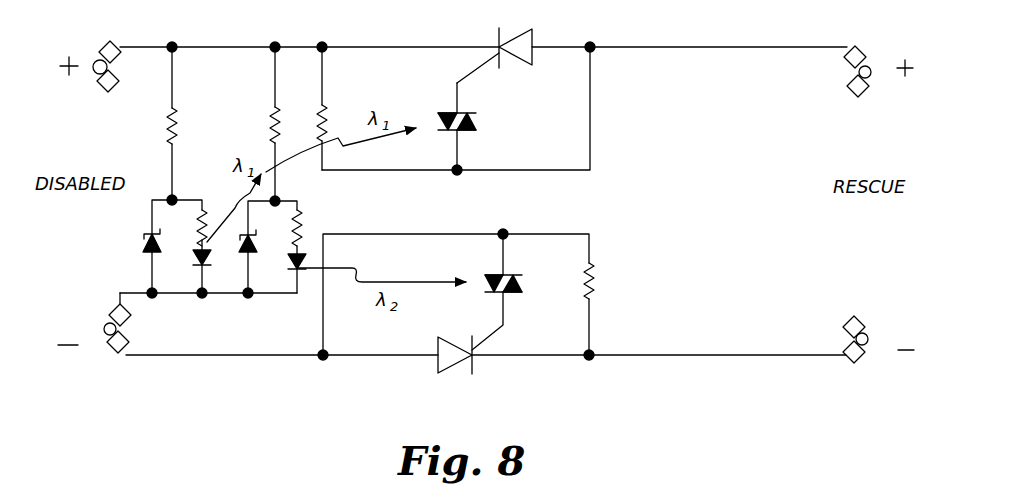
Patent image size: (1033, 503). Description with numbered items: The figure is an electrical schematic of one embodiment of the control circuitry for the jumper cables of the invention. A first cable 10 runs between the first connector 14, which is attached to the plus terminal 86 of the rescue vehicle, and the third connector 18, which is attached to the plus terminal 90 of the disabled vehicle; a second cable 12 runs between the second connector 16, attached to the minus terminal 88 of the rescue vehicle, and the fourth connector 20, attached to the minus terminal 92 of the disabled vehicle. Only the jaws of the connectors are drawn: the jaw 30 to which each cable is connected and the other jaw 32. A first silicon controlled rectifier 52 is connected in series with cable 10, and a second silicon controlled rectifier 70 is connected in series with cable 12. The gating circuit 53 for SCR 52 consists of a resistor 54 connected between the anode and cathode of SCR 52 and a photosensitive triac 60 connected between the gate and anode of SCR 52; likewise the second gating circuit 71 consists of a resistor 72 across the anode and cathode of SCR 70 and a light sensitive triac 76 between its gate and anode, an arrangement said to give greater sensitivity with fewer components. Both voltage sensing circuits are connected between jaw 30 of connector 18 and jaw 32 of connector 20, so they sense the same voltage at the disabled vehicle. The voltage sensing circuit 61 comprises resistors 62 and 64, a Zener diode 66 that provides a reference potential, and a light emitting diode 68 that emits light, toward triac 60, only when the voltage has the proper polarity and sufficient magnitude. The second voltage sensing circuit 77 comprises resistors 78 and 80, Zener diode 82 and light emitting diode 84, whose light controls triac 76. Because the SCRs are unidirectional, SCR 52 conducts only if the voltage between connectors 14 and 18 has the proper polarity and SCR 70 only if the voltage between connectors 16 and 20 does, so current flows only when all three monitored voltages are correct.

The first cable 10 is at (218, 47).
The second cable 12 is at (225, 358).
The first connector 14 is at (861, 50).
The second connector 16 is at (847, 363).
The third connector 18 is at (121, 45).
The fourth connector 20 is at (118, 358).
The jaw 30 is at (489, 210).
The other jaw 32 is at (110, 93).
The first silicon controlled rectifier 52 is at (505, 36).
The gating circuit 53 is at (498, 91).
The resistor 54 is at (324, 108).
The photosensitive triac 60 is at (478, 122).
The voltage sensing circuit 61 is at (177, 172).
The resistor 62 is at (177, 116).
The resistor 64 is at (206, 212).
The Zener diode 66 is at (146, 244).
The light emitting diode 68 is at (192, 266).
The second silicon controlled rectifier 70 is at (452, 369).
The second gating circuit 71 is at (494, 311).
The resistor 72 is at (595, 297).
The light sensitive triac 76 is at (524, 284).
The second voltage sensing circuit 77 is at (288, 201).
The resistor 78 is at (281, 119).
The resistor 80 is at (303, 224).
The Zener diode 82 is at (244, 251).
The light emitting diode 84 is at (290, 268).
The plus terminal of the rescue vehicle 86 is at (870, 78).
The minus terminal of the rescue vehicle 88 is at (870, 338).
The plus terminal of the disabled vehicle 90 is at (96, 73).
The minus terminal of the disabled vehicle 92 is at (104, 330).